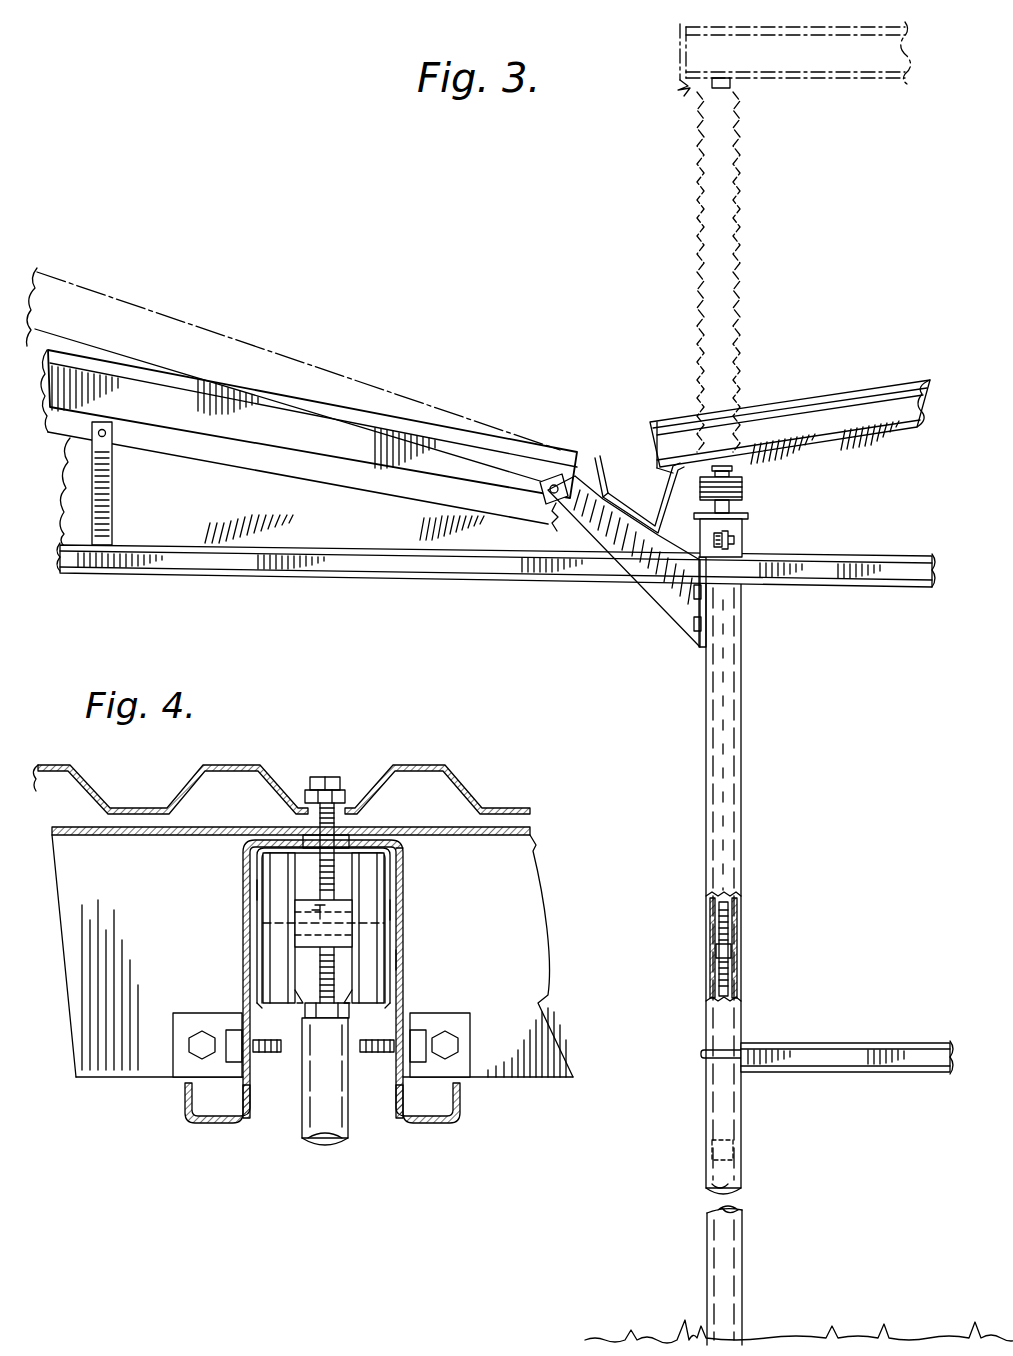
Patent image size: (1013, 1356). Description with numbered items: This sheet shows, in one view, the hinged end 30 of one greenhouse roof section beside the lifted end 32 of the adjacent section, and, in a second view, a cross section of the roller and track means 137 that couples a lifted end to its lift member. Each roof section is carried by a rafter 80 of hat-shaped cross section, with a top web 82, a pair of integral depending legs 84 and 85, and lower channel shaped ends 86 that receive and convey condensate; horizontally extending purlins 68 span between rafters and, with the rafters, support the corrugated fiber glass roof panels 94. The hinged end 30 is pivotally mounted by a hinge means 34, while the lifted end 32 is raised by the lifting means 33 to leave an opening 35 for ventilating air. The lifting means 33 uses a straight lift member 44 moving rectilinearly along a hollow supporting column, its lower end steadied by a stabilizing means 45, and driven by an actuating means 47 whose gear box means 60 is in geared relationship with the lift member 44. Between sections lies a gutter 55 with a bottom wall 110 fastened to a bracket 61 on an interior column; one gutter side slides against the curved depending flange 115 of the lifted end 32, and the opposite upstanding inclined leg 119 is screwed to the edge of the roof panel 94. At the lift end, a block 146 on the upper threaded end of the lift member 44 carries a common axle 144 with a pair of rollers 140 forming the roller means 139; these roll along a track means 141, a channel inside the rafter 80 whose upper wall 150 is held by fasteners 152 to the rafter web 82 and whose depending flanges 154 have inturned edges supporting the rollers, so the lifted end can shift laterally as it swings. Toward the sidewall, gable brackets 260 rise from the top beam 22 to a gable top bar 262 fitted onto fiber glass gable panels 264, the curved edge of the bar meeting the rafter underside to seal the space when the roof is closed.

In FIG. 3, the horizontally extending beam 22 is at (168, 566).
In FIG. 3, the hinged end 30 is at (525, 462).
In FIG. 3, the lifted end 32 is at (817, 57).
In FIG. 3, the lifting means 33 is at (753, 483).
In FIG. 3, the hinge means 34 is at (545, 505).
In FIG. 3, the opening 35 is at (680, 250).
In FIG. 3, the lift member 44 is at (735, 228).
In FIG. 4, the lift member 44 is at (333, 1120).
In FIG. 3, the stabilizing means 45 is at (757, 948).
In FIG. 3, the actuating means 47 is at (750, 541).
In FIG. 3, the gutter 55 is at (630, 388).
In FIG. 3, the gear box means 60 is at (750, 528).
In FIG. 3, the bracket 61 is at (683, 597).
In FIG. 4, the purlin 68 is at (132, 1060).
In FIG. 3, the rafter 80 is at (265, 345).
In FIG. 4, the rafter 80 is at (408, 960).
In FIG. 4, the top web 82 is at (362, 830).
In FIG. 4, the depending leg 84 is at (250, 885).
In FIG. 4, the depending leg 85 is at (392, 912).
In FIG. 4, the channel shaped end 86 is at (220, 1124).
In FIG. 4, the roof panel 94 is at (250, 740).
In FIG. 3, the bottom wall 110 is at (637, 587).
In FIG. 3, the depending flange 115 is at (682, 478).
In FIG. 3, the inclined leg 119 is at (603, 460).
In FIG. 4, the roller and track means 137 is at (262, 975).
In FIG. 4, the roller means 139 is at (408, 880).
In FIG. 4, the roller 140 is at (270, 960).
In FIG. 4, the track means 141 is at (302, 1005).
In FIG. 4, the common axle 144 is at (268, 918).
In FIG. 4, the block 146 is at (300, 890).
In FIG. 4, the upper wall 150 is at (290, 830).
In FIG. 4, the fastener 152 is at (338, 790).
In FIG. 4, the depending flange 154 is at (400, 850).
In FIG. 3, the gable bracket 260 is at (112, 488).
In FIG. 3, the gable top bar 262 is at (150, 432).
In FIG. 3, the gable panel 264 is at (75, 480).